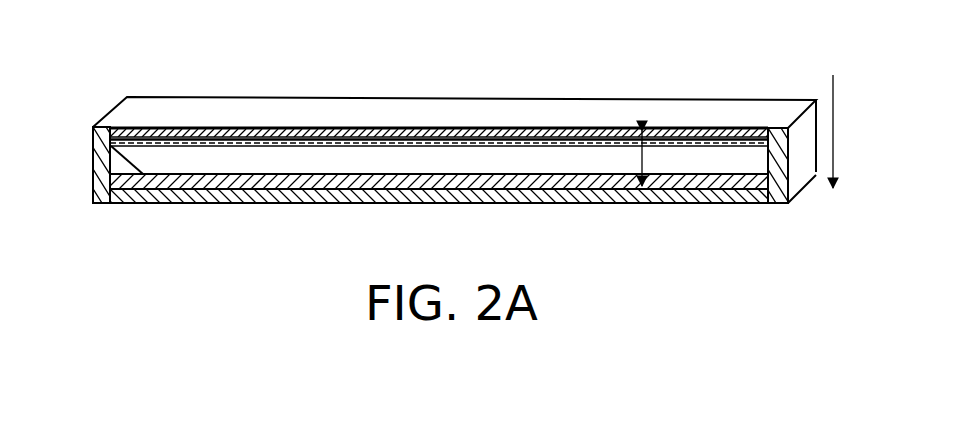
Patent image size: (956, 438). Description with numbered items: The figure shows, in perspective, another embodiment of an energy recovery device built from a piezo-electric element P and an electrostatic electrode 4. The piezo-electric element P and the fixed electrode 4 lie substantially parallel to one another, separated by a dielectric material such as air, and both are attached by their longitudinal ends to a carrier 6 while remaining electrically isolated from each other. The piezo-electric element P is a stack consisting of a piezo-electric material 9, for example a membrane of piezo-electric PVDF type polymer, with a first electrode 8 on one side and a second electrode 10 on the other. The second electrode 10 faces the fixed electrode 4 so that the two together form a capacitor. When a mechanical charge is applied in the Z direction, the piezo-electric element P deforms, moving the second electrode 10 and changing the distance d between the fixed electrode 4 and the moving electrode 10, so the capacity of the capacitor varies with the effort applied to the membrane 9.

The piezo-electric element P is at (676, 94).
The carrier 6 is at (93, 170).
The electrostatic electrode 4 is at (260, 182).
The first electrode 8 is at (278, 127).
The piezo-electric material 9 is at (398, 132).
The second electrode 10 is at (533, 135).
The distance d is at (643, 163).
The Z direction Z is at (845, 133).